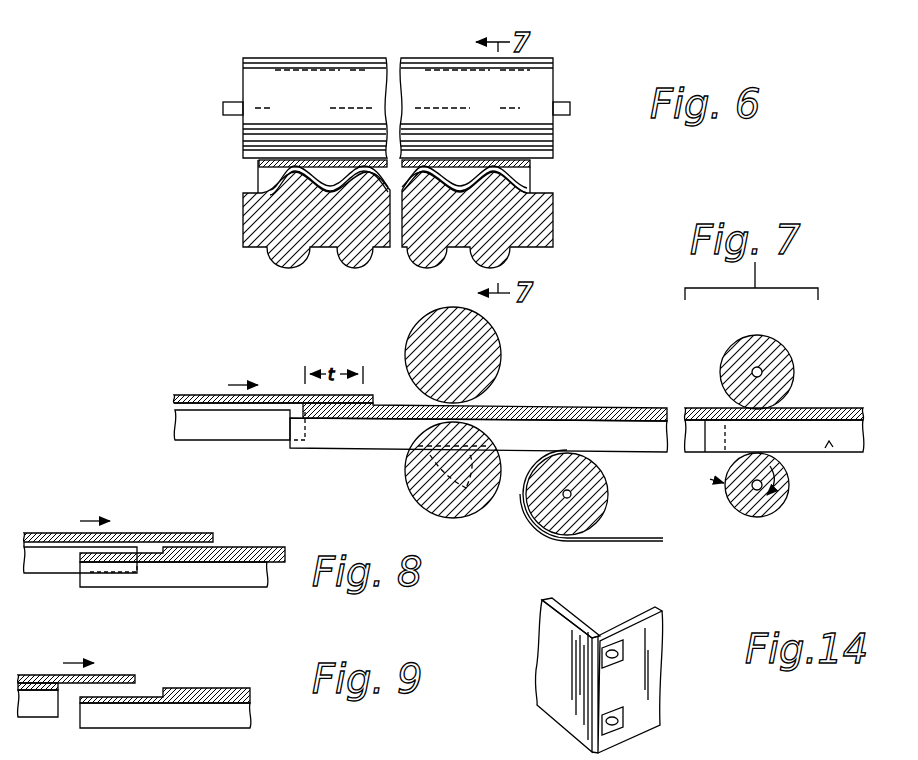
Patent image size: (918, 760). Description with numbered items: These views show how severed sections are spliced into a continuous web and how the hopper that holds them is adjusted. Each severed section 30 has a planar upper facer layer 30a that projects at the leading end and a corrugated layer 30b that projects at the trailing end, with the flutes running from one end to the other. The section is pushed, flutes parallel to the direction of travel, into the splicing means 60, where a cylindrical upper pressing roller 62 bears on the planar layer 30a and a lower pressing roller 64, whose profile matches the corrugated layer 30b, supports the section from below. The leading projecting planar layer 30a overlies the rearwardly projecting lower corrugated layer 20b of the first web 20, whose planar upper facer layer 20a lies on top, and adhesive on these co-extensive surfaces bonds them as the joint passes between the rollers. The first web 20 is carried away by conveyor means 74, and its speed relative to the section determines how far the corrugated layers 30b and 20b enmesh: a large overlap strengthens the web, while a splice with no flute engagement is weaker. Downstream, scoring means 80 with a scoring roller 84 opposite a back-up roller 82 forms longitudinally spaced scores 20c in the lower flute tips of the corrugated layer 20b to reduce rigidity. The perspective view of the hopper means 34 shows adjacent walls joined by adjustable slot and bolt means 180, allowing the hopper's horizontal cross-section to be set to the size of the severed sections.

In FIG. 7, the first web 20 is at (584, 430).
In FIG. 8, the first web 20 is at (208, 549).
In FIG. 9, the first web 20 is at (197, 688).
In FIG. 7, the planar upper facer layer 20a is at (640, 406).
In FIG. 8, the planar upper facer layer 20a is at (255, 547).
In FIG. 9, the planar upper facer layer 20a is at (207, 688).
In FIG. 7, the lower corrugated layer 20b is at (348, 433).
In FIG. 8, the lower corrugated layer 20b is at (173, 572).
In FIG. 9, the lower corrugated layer 20b is at (247, 720).
In FIG. 7, the scores 20c is at (829, 447).
In FIG. 6, the severed section 30 is at (355, 167).
In FIG. 7, the severed section 30 is at (273, 413).
In FIG. 8, the severed section 30 is at (118, 544).
In FIG. 9, the severed section 30 is at (89, 693).
In FIG. 6, the planar upper facer layer 30a is at (277, 155).
In FIG. 7, the planar upper facer layer 30a is at (273, 399).
In FIG. 8, the planar upper facer layer 30a is at (155, 533).
In FIG. 9, the planar upper facer layer 30a is at (117, 675).
In FIG. 6, the corrugated layer 30b is at (278, 197).
In FIG. 7, the corrugated layer 30b is at (222, 425).
In FIG. 8, the corrugated layer 30b is at (42, 563).
In FIG. 9, the corrugated layer 30b is at (32, 703).
In FIG. 14, the hopper means 34 is at (627, 663).
In FIG. 6, the splicing means 60 is at (396, 156).
In FIG. 7, the splicing means 60 is at (450, 427).
In FIG. 6, the upper pressing roller 62 is at (300, 66).
In FIG. 7, the upper pressing roller 62 is at (501, 351).
In FIG. 6, the lower pressing roller 64 is at (298, 252).
In FIG. 7, the lower pressing roller 64 is at (480, 508).
In FIG. 7, the conveyor means 74 is at (624, 532).
In FIG. 7, the scoring means 80 is at (767, 434).
In FIG. 7, the back-up roller 82 is at (730, 358).
In FIG. 7, the scoring roller 84 is at (765, 506).
In FIG. 14, the adjustable slot and bolt means 180 is at (630, 648).